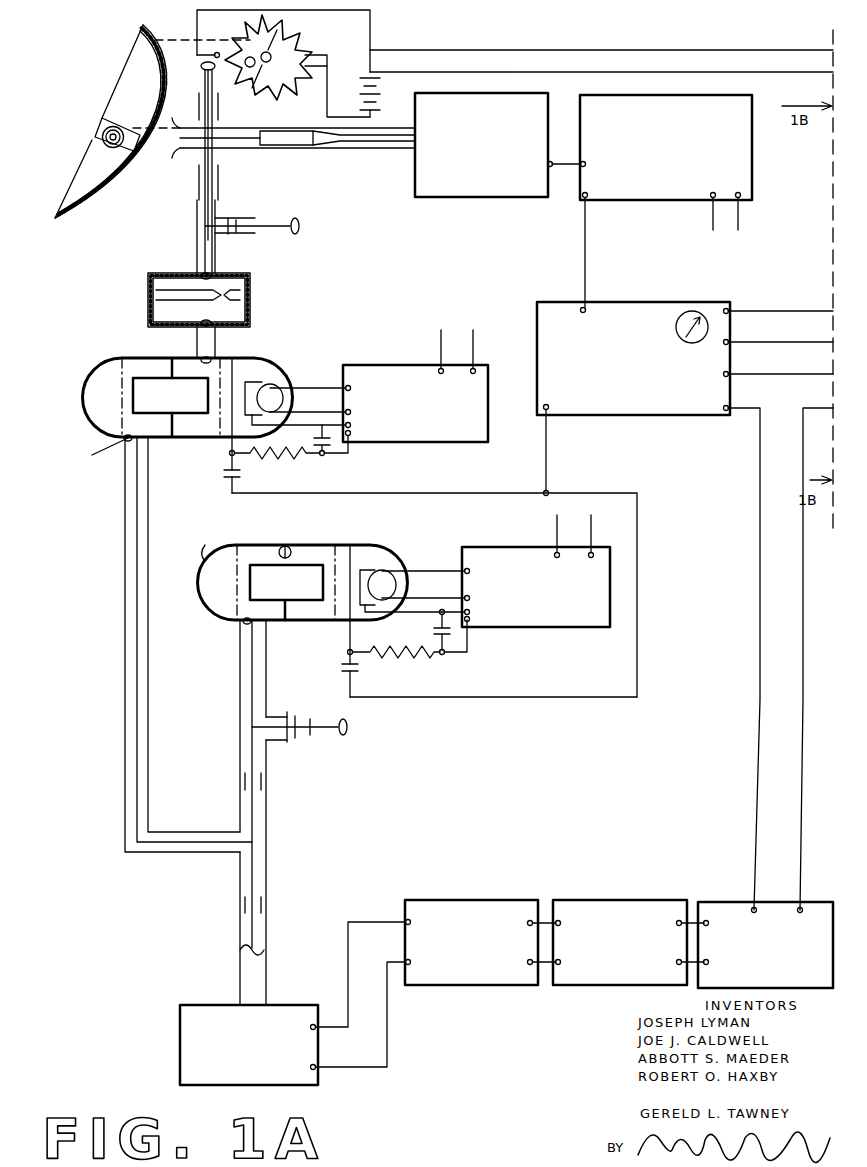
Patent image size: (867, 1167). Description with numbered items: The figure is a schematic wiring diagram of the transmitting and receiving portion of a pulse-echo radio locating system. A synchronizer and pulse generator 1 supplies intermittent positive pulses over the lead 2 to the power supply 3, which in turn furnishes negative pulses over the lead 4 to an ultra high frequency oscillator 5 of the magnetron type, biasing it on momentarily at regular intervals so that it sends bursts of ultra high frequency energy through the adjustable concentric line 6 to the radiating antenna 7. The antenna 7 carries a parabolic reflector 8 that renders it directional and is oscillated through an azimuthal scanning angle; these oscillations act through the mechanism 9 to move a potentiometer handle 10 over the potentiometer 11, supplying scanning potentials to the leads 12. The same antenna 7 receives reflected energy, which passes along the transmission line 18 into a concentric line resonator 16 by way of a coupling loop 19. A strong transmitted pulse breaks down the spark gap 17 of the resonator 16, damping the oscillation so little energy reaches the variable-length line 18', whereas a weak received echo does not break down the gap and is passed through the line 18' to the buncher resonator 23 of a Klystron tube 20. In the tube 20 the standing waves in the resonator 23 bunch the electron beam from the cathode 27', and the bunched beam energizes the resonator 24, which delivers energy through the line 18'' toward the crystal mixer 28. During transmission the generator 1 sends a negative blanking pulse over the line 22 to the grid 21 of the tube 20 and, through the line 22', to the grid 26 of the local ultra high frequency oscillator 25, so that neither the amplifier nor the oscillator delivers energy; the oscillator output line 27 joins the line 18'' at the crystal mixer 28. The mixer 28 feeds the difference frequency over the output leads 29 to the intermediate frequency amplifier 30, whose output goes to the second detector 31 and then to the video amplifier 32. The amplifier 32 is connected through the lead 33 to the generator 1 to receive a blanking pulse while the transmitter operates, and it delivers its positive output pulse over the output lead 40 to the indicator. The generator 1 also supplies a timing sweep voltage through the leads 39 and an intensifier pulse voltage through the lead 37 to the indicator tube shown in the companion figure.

The synchronizer and pulse generator 1 is at (631, 286).
The lead 2 is at (590, 247).
The power supply 3 is at (700, 193).
The lead 4 is at (571, 170).
The ultra high frequency oscillator 5 is at (503, 198).
The concentric line 6 is at (396, 154).
The radiating antenna 7 is at (100, 128).
The parabolic reflector 8 is at (113, 205).
The mechanism 9 is at (176, 42).
The potentiometer handle 10 is at (268, 57).
The potentiometer 11 is at (300, 27).
The leads 12 is at (679, 60).
The concentric line resonator 16 is at (146, 311).
The spark gap 17 is at (248, 291).
The transmission line 18 is at (228, 167).
The line 18' is at (230, 345).
The line 18'' is at (164, 644).
The coupling loop 19 is at (226, 279).
The ultra high frequency tube 20 is at (191, 440).
The grid 21 is at (246, 383).
The line 22 is at (430, 553).
The line 22' is at (489, 680).
The buncher resonator 23 is at (193, 368).
The resonator 24 is at (136, 368).
The local ultra high frequency oscillator 25 is at (324, 551).
The grid 26 is at (362, 565).
The output line 27 is at (293, 812).
The cathode 27' is at (299, 395).
The crystal mixer 28 is at (184, 1024).
The output leads 29 is at (386, 1020).
The intermediate frequency amplifier 30 is at (490, 906).
The second detector 31 is at (612, 907).
The video amplifier 32 is at (710, 910).
The lead 33 is at (754, 628).
The lead 37 is at (784, 307).
The leads 39 is at (812, 344).
The output lead 40 is at (806, 717).